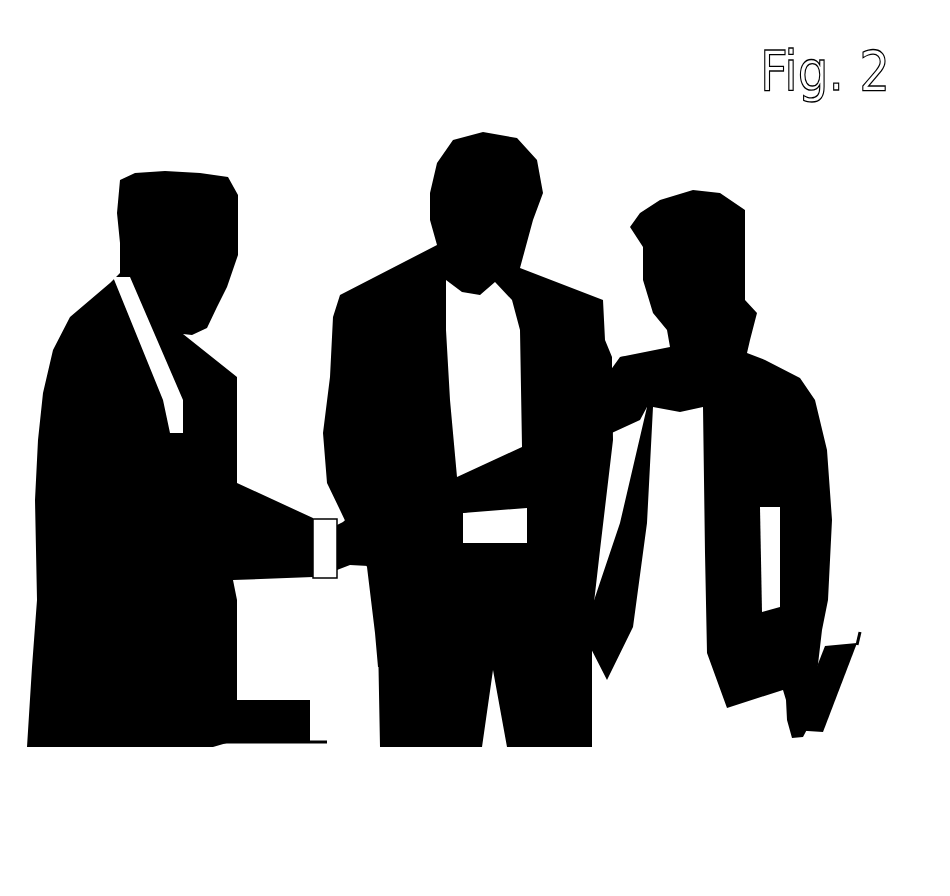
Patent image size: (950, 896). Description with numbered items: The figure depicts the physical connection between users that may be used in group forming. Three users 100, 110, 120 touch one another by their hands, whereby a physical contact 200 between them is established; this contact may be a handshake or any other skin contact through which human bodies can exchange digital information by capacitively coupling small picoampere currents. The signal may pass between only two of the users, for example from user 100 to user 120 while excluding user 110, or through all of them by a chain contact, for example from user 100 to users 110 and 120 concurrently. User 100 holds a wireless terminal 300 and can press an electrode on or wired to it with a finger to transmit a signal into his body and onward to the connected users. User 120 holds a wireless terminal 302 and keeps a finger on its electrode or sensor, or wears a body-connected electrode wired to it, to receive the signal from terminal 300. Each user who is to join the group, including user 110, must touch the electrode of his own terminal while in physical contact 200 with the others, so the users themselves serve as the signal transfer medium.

The user 100 is at (182, 432).
The user 110 is at (468, 374).
The user 120 is at (584, 442).
The physical contact 200 is at (472, 747).
The wireless terminal 300 is at (266, 736).
The wireless terminal 302 is at (838, 682).